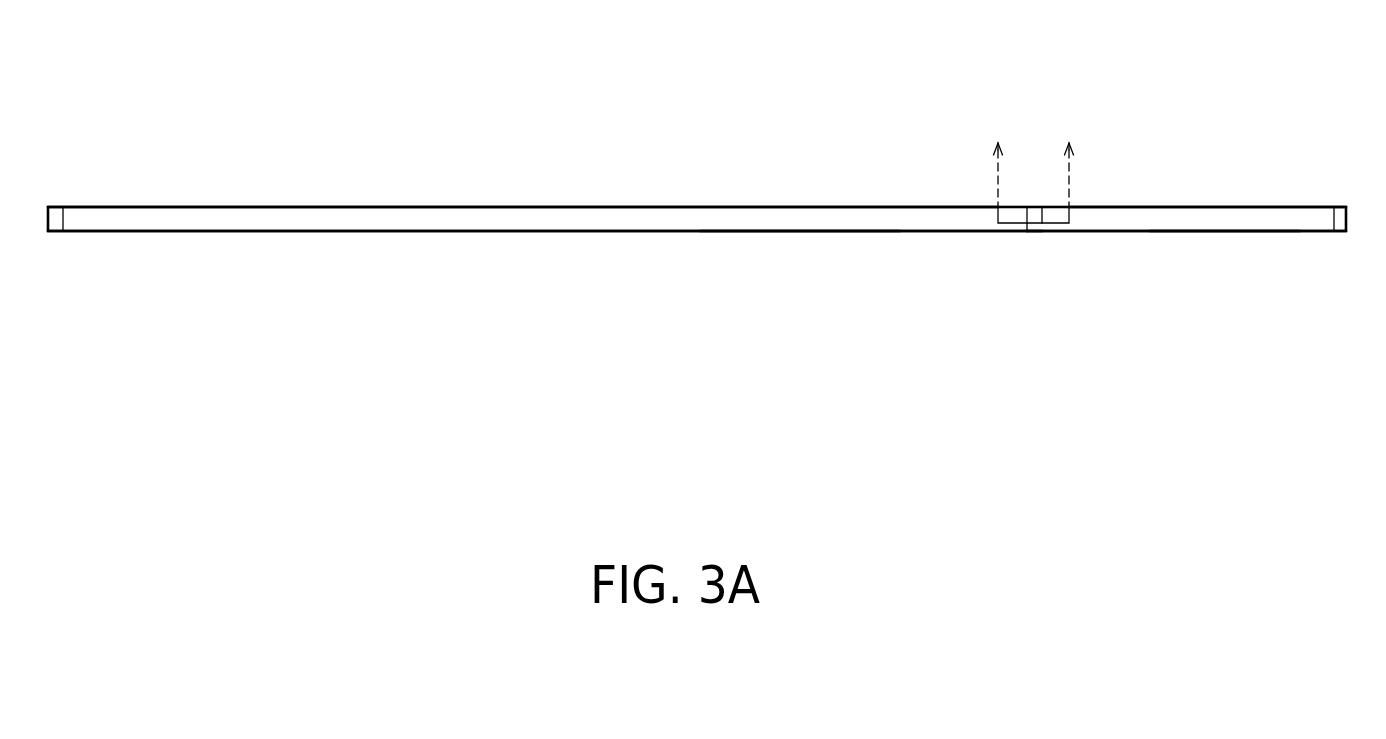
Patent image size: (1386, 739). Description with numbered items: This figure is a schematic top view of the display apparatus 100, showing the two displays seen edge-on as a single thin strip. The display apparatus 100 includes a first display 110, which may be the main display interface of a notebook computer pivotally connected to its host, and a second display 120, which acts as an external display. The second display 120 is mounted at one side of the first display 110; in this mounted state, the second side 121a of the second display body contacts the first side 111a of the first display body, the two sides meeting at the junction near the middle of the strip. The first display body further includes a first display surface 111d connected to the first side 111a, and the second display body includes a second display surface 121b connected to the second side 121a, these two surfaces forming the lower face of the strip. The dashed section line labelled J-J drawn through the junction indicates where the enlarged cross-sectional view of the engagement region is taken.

The display apparatus 100 is at (1352, 432).
The first display 110 is at (742, 247).
The first side 111a is at (1032, 225).
The first display surface 111d is at (828, 232).
The second display 120 is at (1318, 247).
The second side 121a is at (1026, 214).
The second display surface 121b is at (1233, 233).